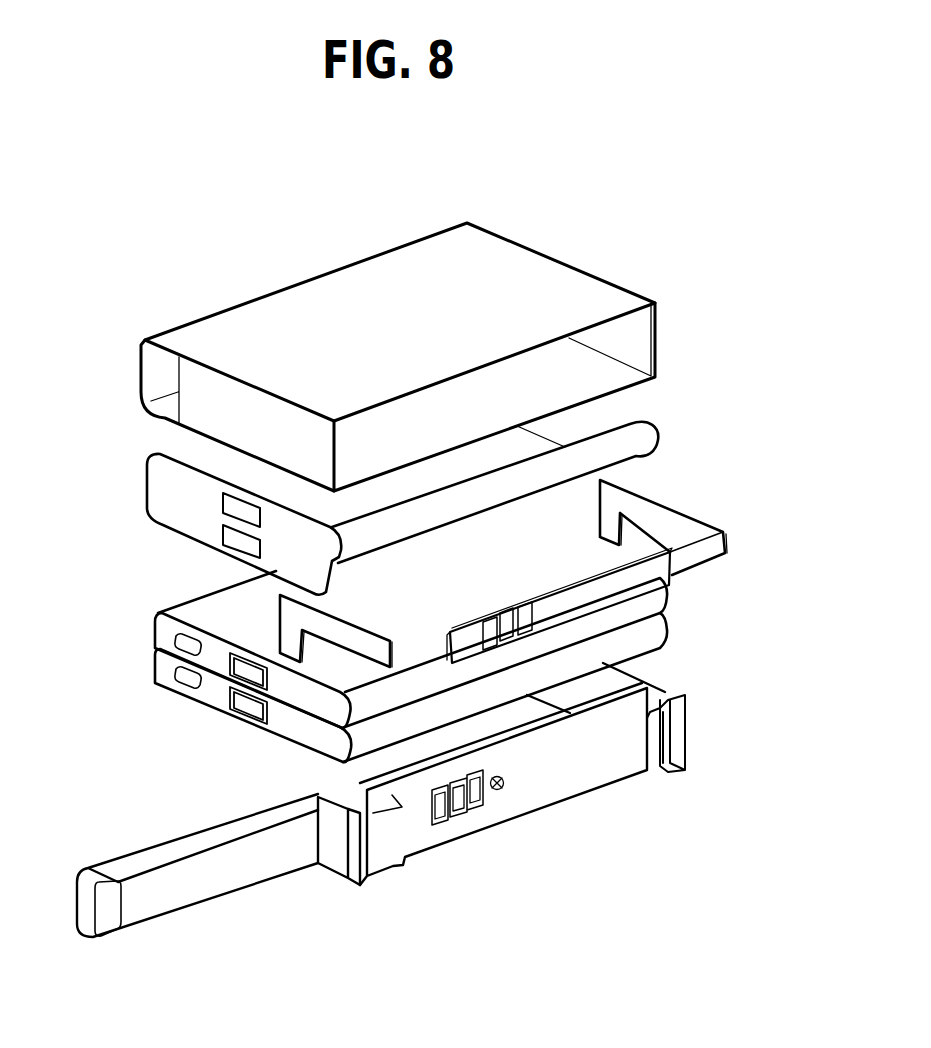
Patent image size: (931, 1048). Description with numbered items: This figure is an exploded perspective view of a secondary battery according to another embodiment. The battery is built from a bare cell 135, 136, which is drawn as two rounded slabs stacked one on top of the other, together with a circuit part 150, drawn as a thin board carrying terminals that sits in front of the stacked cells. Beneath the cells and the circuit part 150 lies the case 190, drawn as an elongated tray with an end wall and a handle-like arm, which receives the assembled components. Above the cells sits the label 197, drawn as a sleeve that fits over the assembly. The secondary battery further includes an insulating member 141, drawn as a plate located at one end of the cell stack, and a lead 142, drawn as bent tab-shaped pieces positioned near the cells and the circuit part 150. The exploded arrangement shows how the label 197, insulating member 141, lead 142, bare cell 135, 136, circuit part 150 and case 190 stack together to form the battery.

The label 197 is at (220, 327).
The insulating member 141 is at (162, 489).
The lead 142 is at (372, 622).
The bare cell 135 is at (160, 628).
The bare cell 136 is at (162, 665).
The circuit part 150 is at (620, 588).
The case 190 is at (568, 813).